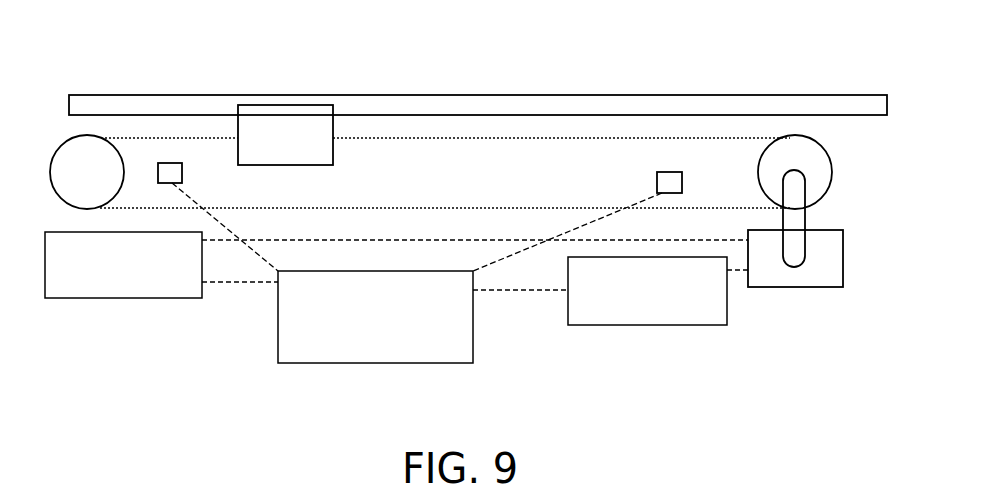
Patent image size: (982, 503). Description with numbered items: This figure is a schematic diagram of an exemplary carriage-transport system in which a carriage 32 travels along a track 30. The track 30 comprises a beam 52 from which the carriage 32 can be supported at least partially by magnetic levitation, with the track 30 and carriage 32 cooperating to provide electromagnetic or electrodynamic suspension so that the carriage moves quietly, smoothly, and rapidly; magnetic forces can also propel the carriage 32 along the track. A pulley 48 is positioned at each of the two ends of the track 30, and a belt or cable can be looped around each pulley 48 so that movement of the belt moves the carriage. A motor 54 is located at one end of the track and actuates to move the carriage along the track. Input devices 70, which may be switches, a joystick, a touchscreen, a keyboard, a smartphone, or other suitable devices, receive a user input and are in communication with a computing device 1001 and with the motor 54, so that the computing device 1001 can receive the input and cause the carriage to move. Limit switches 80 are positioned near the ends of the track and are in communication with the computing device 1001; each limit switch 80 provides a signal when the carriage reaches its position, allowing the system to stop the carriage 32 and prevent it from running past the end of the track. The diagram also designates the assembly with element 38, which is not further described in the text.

The track 30 is at (370, 103).
The carriage 32 is at (282, 138).
The beam 52 is at (400, 103).
The pulley 48 is at (77, 155).
The limit switch 80 is at (168, 173).
The tensioning assembly 38 is at (861, 190).
The motor 54 is at (825, 271).
The input device 70 is at (386, 278).
The computing device 1001 is at (375, 317).